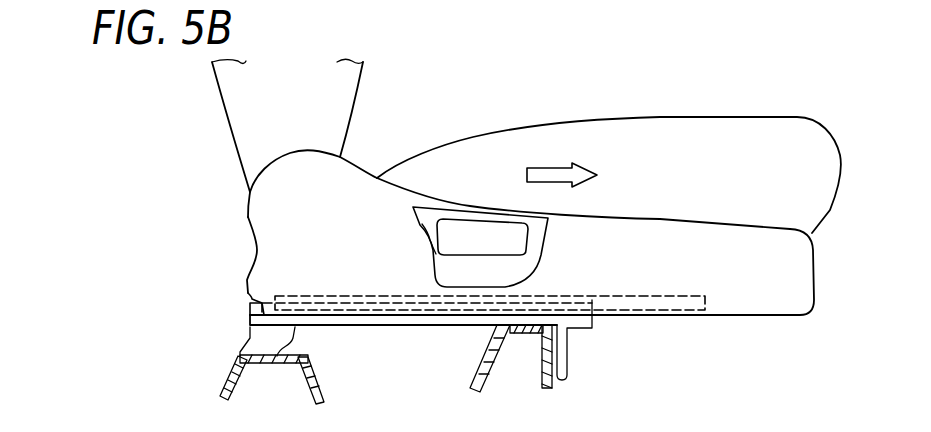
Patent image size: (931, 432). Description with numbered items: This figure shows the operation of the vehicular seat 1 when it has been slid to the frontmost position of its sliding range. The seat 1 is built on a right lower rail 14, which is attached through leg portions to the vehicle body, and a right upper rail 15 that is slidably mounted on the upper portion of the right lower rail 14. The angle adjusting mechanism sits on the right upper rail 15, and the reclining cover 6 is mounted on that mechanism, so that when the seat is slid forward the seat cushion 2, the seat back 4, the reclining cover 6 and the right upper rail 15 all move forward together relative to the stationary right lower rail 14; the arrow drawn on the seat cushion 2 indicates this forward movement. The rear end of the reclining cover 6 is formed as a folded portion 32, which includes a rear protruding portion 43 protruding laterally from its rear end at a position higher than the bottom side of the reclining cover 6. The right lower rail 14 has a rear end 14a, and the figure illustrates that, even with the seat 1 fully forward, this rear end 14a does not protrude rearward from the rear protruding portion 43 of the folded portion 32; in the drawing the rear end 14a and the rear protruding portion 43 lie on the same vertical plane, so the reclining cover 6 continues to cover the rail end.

The seat 1 is at (610, 90).
The seat cushion 2 is at (743, 117).
The seat back 4 is at (360, 107).
The reclining cover 6 is at (240, 214).
The folded portion 32 is at (236, 272).
The rear protruding portion 43 is at (247, 292).
The right lower rail 14 is at (373, 330).
The rear end of the right lower rail 14a is at (250, 310).
The right upper rail 15 is at (665, 312).